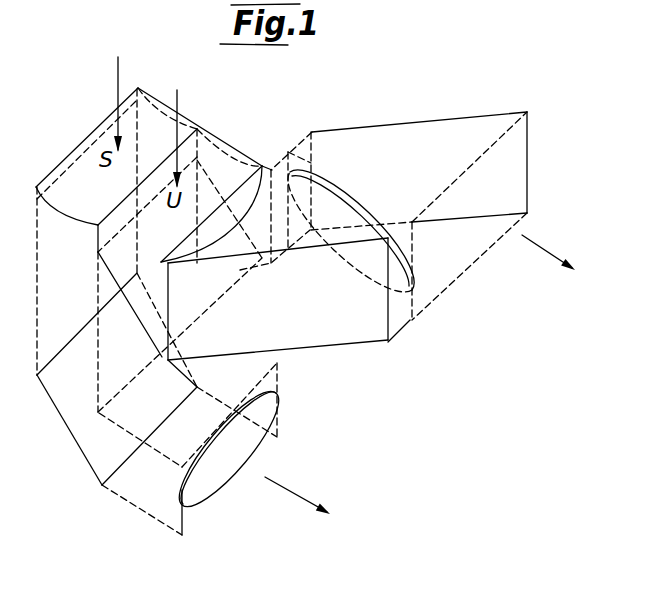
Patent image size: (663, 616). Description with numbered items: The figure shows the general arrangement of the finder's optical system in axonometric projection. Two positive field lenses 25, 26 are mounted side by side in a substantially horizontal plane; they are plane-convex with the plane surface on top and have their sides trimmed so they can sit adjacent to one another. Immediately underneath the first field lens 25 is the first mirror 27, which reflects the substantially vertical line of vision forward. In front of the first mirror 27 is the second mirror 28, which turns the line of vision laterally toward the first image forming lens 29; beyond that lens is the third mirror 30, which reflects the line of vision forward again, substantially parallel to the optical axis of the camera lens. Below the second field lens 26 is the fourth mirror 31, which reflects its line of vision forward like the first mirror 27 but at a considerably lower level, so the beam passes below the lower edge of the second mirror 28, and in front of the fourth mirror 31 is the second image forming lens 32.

The first field lens 25 is at (226, 142).
The second field lens 26 is at (152, 97).
The first mirror 27 is at (110, 273).
The second mirror 28 is at (325, 347).
The first image forming lens 29 is at (398, 296).
The third mirror 30 is at (432, 121).
The fourth mirror 31 is at (70, 432).
The second image forming lens 32 is at (182, 490).